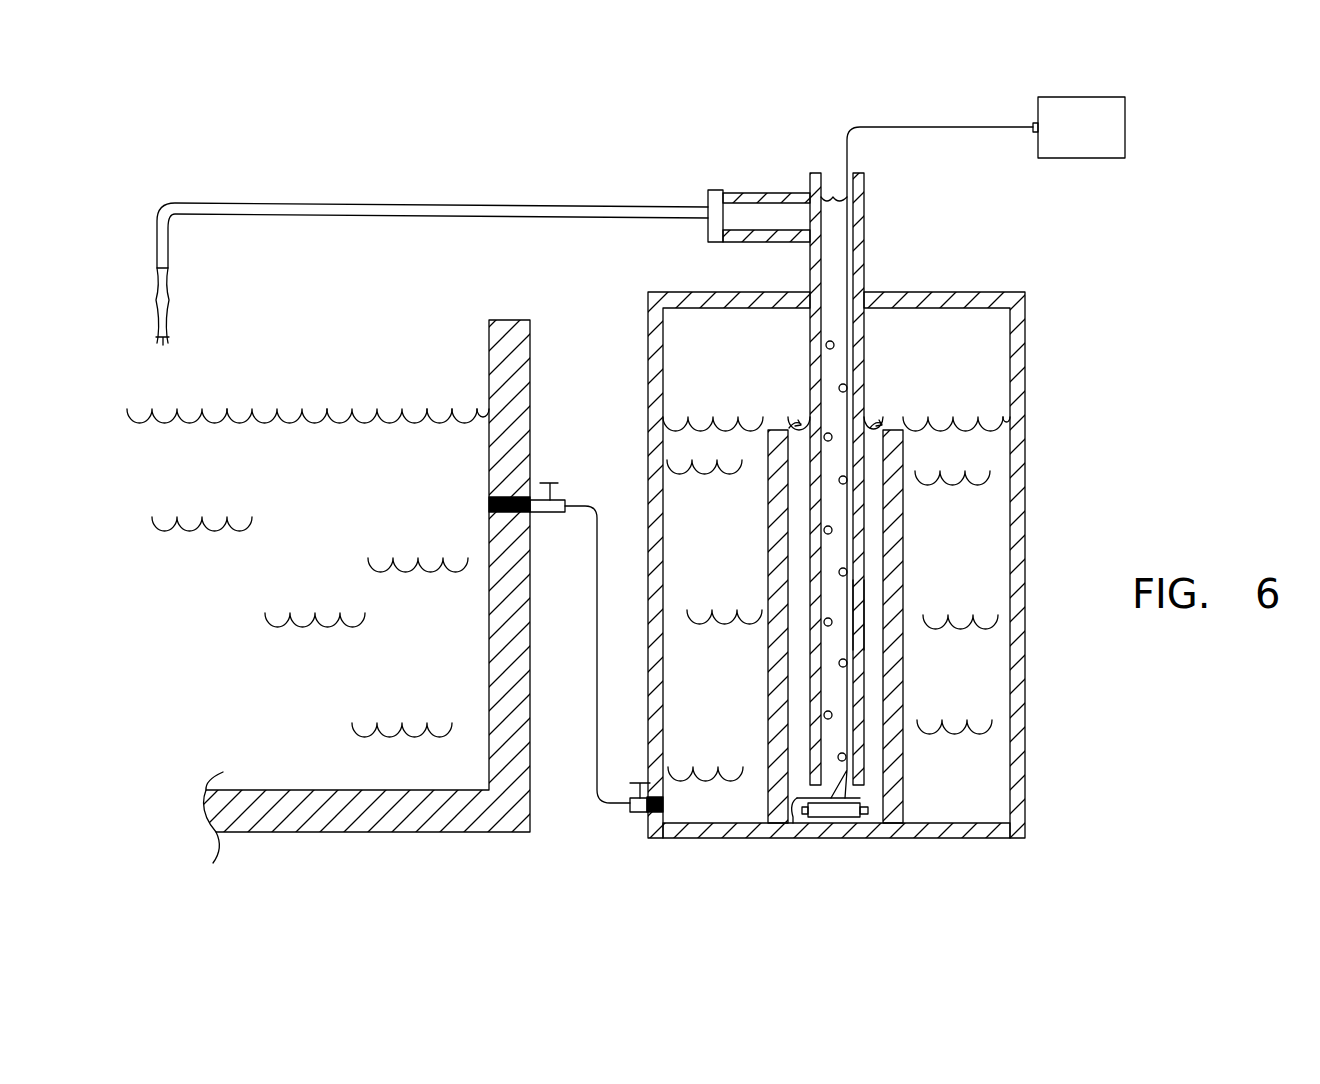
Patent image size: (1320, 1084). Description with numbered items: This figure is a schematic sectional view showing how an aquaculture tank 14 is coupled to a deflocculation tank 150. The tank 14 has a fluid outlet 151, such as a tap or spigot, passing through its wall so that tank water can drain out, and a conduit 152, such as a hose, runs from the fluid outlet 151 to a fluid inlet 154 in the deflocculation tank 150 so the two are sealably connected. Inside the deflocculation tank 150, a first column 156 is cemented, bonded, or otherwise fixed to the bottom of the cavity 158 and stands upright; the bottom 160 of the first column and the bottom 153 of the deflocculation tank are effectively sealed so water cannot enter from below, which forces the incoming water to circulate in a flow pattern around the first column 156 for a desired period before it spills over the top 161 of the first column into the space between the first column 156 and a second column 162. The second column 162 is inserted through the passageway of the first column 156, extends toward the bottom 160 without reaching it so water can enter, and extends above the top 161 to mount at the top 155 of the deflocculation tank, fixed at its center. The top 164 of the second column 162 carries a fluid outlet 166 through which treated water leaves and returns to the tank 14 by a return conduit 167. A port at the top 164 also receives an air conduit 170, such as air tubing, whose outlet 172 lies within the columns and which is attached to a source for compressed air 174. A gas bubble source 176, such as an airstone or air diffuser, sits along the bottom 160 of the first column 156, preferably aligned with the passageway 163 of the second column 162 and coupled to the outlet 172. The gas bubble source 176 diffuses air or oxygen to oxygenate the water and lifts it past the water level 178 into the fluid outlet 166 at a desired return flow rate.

The tank 14 is at (384, 535).
The deflocculation tank 150 is at (646, 135).
The fluid outlet 151 is at (557, 502).
The conduit 152 is at (597, 625).
The bottom of the deflocculation tank 153 is at (692, 828).
The fluid inlet 154 is at (638, 817).
The top of the deflocculation tank 155 is at (960, 300).
The first column 156 is at (892, 752).
The cavity 158 is at (988, 370).
The bottom of the first column 160 is at (835, 822).
The top of the first column 161 is at (772, 450).
The second column 162 is at (856, 612).
The passageway of the second column 163 is at (832, 540).
The top of the second column 164 is at (880, 228).
The fluid outlet 166 is at (760, 218).
The return conduit 167 is at (335, 208).
The air conduit 170 is at (948, 125).
The outlet of the air conduit 172 is at (793, 823).
The source for compressed air 174 is at (1106, 143).
The gas bubble source 176 is at (853, 813).
The water level 178 is at (709, 423).